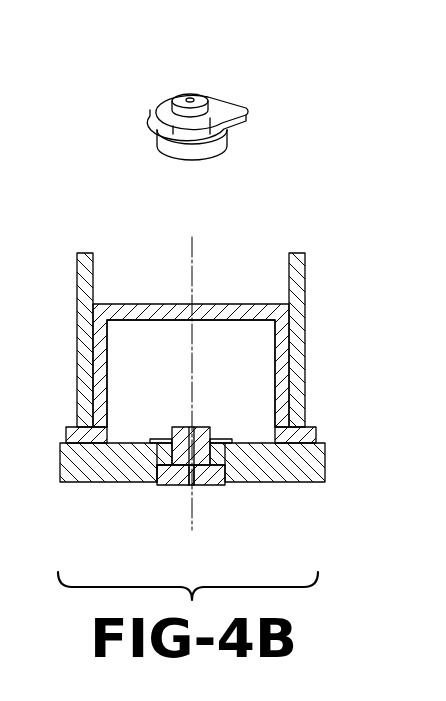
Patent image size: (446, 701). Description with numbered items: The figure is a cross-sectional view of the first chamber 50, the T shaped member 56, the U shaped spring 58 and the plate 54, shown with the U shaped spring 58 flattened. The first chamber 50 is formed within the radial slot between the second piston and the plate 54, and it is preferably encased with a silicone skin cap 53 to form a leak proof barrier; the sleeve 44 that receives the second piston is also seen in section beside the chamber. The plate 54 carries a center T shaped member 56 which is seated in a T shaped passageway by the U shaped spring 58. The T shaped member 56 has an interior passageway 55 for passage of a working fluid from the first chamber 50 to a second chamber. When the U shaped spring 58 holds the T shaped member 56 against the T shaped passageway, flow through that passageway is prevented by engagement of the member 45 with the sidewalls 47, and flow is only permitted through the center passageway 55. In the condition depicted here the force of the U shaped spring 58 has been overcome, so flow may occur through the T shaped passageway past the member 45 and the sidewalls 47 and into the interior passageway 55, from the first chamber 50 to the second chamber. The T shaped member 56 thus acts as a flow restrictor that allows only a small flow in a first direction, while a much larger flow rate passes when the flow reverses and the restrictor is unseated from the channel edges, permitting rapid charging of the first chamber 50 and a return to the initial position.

The sleeve 44 is at (77, 310).
The member 45 is at (220, 462).
The sidewalls 47 is at (157, 467).
The first chamber 50 is at (250, 368).
The silicone skin cap 53 is at (152, 310).
The plate 54 is at (282, 468).
The interior passageway 55 is at (192, 427).
The T shaped member 56 is at (208, 162).
The U shaped spring 58 is at (227, 107).